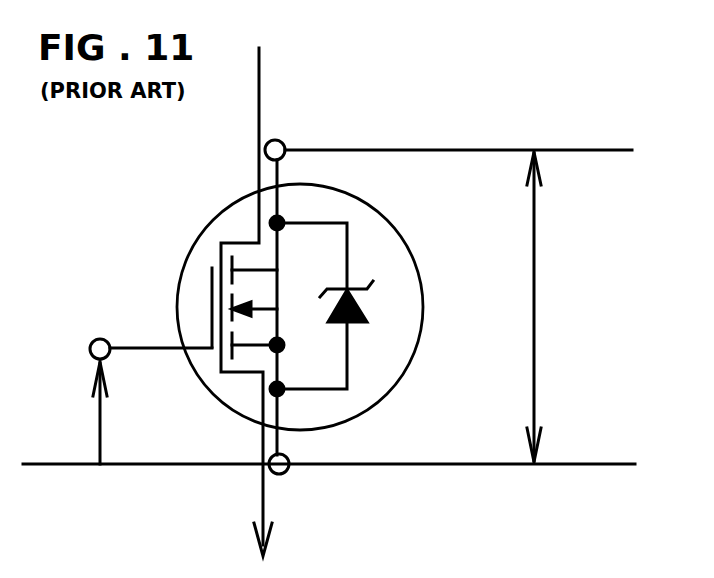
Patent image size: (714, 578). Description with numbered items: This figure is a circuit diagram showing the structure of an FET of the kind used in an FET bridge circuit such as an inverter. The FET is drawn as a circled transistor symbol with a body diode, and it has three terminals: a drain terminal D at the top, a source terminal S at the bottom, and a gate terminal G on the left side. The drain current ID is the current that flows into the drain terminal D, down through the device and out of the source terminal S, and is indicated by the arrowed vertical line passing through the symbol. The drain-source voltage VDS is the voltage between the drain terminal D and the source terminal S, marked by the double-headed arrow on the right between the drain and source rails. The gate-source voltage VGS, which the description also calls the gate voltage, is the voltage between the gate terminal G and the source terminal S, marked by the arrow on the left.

The drain terminal D is at (434, 151).
The gate terminal G is at (135, 350).
The source terminal S is at (329, 475).
The drain current ID is at (271, 302).
The gate-source voltage VGS is at (64, 412).
The drain-source voltage VDS is at (571, 307).